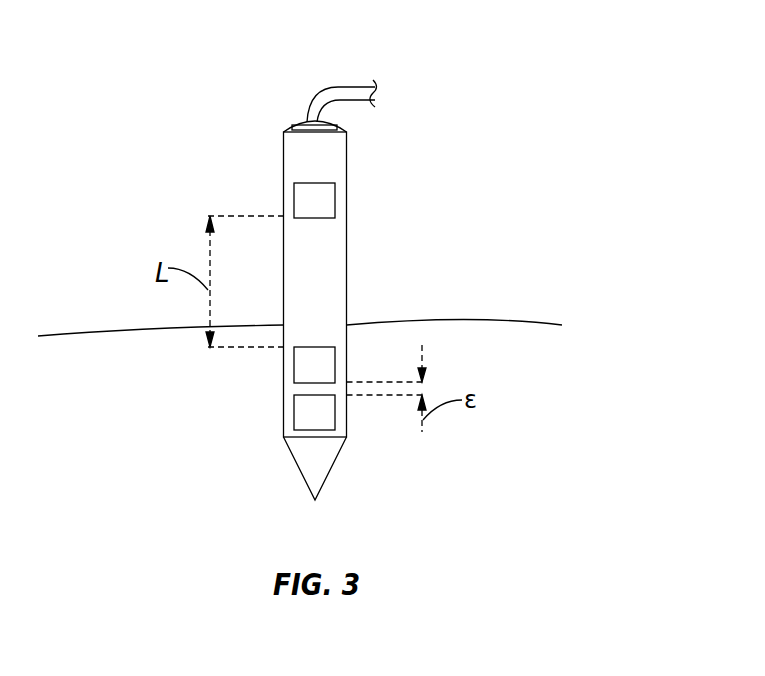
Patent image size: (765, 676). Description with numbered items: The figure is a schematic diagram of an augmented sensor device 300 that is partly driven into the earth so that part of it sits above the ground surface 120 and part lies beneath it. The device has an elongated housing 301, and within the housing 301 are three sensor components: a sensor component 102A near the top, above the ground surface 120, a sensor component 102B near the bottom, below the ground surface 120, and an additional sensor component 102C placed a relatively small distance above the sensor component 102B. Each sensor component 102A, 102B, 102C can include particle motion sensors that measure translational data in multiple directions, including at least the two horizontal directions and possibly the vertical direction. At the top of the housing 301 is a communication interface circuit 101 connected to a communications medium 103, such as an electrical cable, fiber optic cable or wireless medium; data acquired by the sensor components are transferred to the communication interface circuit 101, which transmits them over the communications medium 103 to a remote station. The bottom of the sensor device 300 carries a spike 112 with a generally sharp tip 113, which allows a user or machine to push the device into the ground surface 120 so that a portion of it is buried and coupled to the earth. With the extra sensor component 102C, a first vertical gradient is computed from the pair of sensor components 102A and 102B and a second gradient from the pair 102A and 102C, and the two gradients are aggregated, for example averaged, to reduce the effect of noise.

The sensor device 300 is at (348, 173).
The housing 301 is at (283, 293).
The communication interface circuit 101 is at (292, 128).
The communications medium 103 is at (332, 87).
The sensor component 102A is at (294, 200).
The sensor component 102B is at (294, 410).
The sensor component 102C is at (294, 365).
The spike 112 is at (297, 470).
The tip 113 is at (315, 500).
The ground surface 120 is at (105, 332).